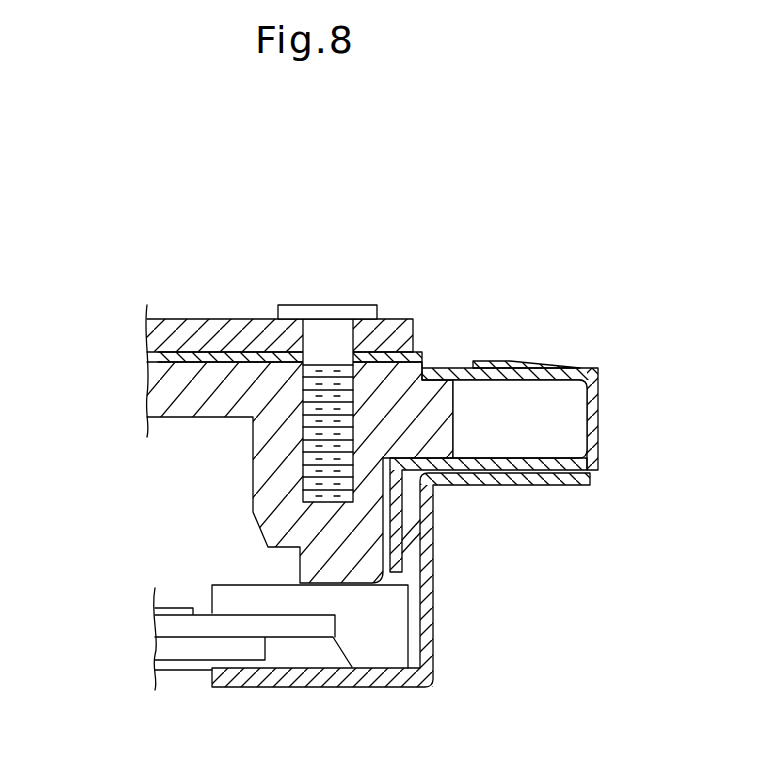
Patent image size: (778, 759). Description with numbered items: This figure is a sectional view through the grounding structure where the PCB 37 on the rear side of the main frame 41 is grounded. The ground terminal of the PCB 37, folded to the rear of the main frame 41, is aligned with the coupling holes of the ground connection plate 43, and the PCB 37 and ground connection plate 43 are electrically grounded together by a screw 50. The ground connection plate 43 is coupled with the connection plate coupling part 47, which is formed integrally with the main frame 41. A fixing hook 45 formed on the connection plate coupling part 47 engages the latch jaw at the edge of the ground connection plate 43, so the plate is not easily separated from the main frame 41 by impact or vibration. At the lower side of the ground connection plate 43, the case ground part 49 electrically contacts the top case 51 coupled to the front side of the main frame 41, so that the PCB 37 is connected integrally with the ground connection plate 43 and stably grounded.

The PCB 37 is at (205, 337).
The main frame 41 is at (172, 386).
The ground connection plate 43 is at (412, 352).
The fixing hook 45 is at (508, 368).
The connection plate coupling part 47 is at (560, 427).
The case ground part 49 is at (430, 523).
The screw 50 is at (331, 313).
The top case 51 is at (433, 670).